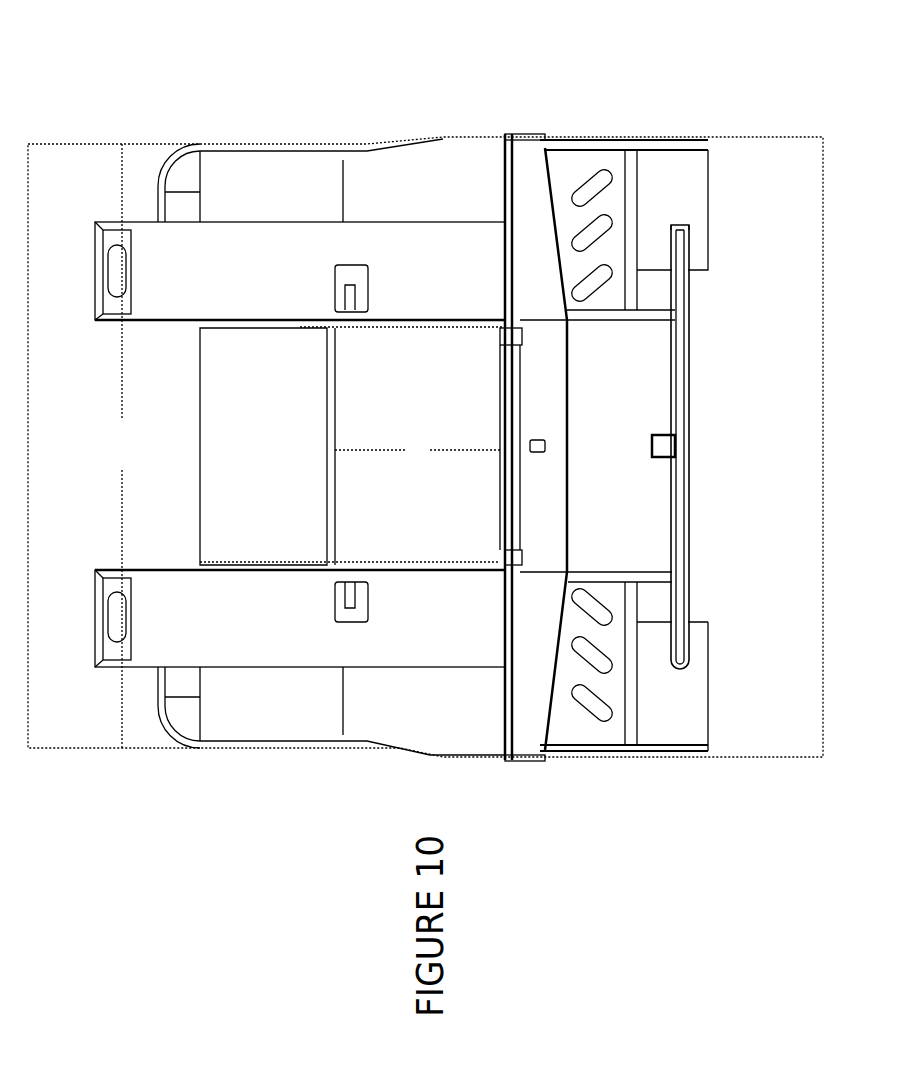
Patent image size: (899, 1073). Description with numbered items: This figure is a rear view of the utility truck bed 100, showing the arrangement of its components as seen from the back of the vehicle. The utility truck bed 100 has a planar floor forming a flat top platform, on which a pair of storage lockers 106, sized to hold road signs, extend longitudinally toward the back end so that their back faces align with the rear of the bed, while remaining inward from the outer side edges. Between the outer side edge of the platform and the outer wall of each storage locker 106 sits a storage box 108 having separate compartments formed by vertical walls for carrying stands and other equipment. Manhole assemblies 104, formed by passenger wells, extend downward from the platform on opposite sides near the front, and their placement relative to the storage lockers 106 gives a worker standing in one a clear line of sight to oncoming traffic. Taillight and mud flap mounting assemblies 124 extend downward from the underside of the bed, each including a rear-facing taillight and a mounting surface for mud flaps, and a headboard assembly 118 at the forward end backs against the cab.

The utility truck bed 100 is at (162, 132).
The manhole assembly 104 is at (661, 168).
The storage locker 106 is at (293, 242).
The storage box 108 is at (444, 165).
The headboard assembly 118 is at (236, 715).
The taillight and mud flap mounting assembly 124 is at (581, 163).